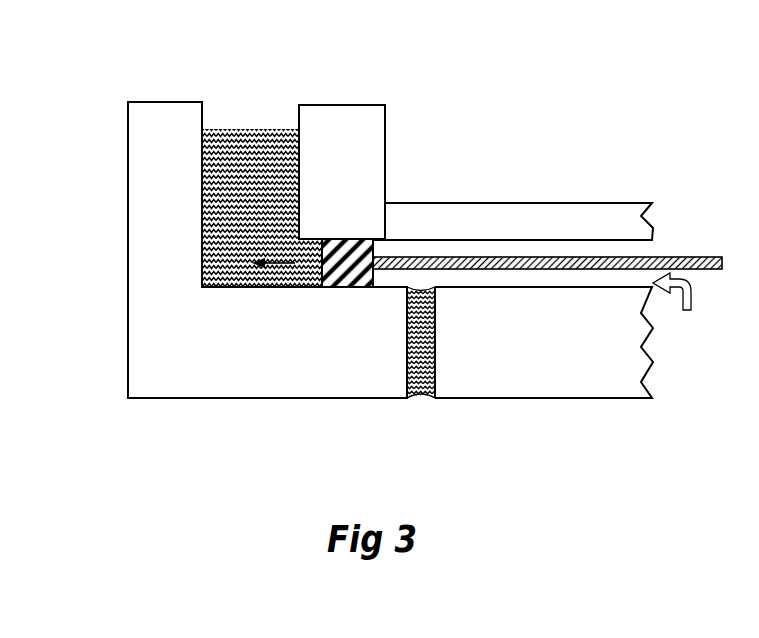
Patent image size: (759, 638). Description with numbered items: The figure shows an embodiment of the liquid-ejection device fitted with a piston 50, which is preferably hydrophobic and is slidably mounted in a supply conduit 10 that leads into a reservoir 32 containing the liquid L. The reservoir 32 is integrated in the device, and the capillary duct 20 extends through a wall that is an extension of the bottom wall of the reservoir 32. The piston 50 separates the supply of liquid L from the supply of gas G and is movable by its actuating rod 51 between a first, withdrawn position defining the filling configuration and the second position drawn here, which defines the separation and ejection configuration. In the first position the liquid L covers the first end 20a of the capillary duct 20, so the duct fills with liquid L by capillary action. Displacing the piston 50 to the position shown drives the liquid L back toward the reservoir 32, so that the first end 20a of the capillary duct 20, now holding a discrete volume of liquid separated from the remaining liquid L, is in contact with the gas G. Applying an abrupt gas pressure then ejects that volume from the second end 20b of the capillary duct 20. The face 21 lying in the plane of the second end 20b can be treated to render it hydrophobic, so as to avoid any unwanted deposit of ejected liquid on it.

The reservoir 32 is at (127, 177).
The liquid L is at (230, 138).
The piston 50 is at (365, 245).
The supply conduit 10 is at (488, 240).
The actuating rod 51 is at (652, 258).
The face 21 is at (537, 397).
The capillary duct 20 is at (435, 352).
The first end 20a is at (435, 293).
The second end 20b is at (403, 398).
The gas G is at (675, 308).